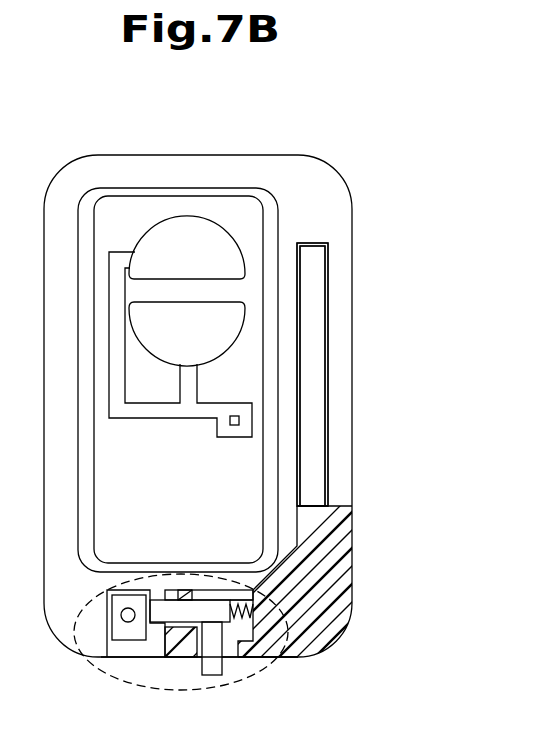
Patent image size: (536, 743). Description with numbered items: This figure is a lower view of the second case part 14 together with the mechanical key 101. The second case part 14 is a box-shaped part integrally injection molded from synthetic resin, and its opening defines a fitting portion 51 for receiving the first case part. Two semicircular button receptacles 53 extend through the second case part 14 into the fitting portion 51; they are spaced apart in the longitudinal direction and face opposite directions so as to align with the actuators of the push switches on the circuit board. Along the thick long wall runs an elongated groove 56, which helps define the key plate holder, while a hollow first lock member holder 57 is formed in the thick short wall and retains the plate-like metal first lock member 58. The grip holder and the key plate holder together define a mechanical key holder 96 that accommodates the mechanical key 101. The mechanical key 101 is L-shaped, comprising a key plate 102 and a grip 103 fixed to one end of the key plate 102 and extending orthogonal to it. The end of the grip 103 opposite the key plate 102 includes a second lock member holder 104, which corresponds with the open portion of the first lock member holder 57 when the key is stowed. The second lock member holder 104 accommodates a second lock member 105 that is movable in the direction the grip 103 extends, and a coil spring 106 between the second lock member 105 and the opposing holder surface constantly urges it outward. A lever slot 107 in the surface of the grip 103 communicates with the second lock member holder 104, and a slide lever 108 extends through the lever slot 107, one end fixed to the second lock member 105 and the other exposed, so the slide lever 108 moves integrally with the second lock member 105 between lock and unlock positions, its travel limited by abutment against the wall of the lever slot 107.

The second case part 14 is at (310, 155).
The fitting portion 51 is at (153, 205).
The button receptacles 53 is at (228, 275).
The elongated groove 56 is at (318, 350).
The first lock member holder 57 is at (100, 598).
The first lock member 58 is at (118, 632).
The mechanical key holder 96 is at (315, 421).
The mechanical key 101 is at (326, 648).
The key plate 102 is at (318, 470).
The grip 103 is at (292, 659).
The second lock member holder 104 is at (176, 597).
The second lock member 105 is at (156, 600).
The coil spring 106 is at (237, 600).
The lever slot 107 is at (236, 660).
The slide lever 108 is at (210, 676).